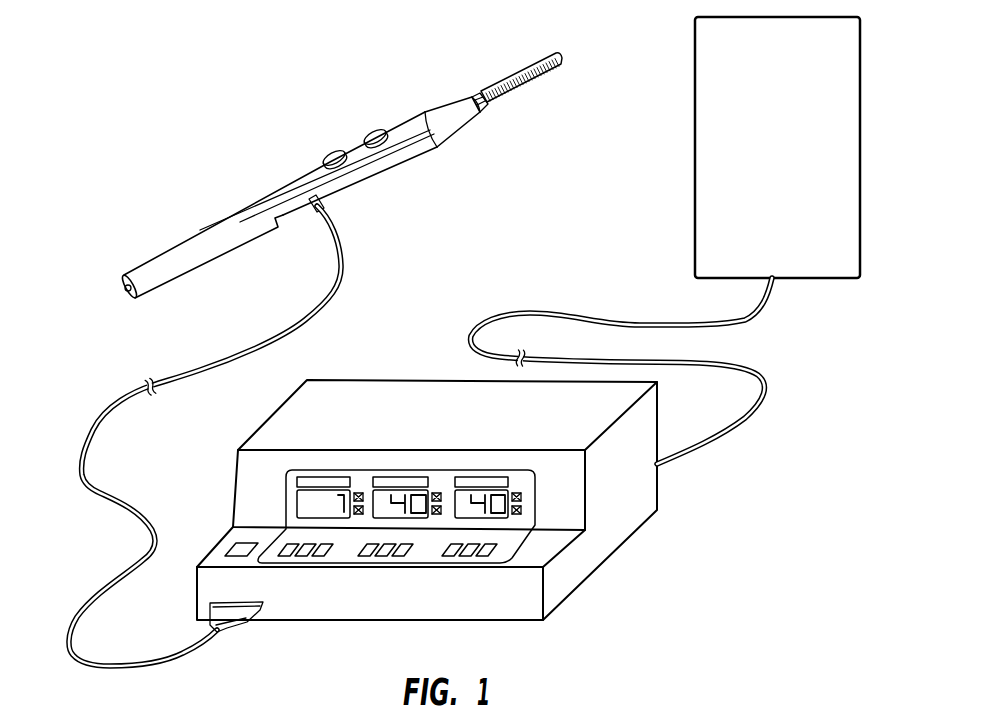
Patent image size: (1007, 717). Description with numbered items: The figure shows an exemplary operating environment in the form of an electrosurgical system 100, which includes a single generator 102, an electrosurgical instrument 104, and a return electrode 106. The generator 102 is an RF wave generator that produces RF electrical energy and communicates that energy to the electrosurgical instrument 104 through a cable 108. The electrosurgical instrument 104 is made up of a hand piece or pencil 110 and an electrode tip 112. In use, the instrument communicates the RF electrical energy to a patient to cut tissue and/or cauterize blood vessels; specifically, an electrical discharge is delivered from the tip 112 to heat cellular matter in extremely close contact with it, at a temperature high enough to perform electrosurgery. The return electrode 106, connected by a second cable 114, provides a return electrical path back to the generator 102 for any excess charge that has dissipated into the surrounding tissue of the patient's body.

The electrosurgical system 100 is at (282, 78).
The generator 102 is at (613, 507).
The electrosurgical instrument 104 is at (252, 181).
The return electrode 106 is at (794, 151).
The cable 108 is at (110, 420).
The hand piece or pencil 110 is at (368, 187).
The electrode tip 112 is at (513, 90).
The cable 114 is at (727, 427).